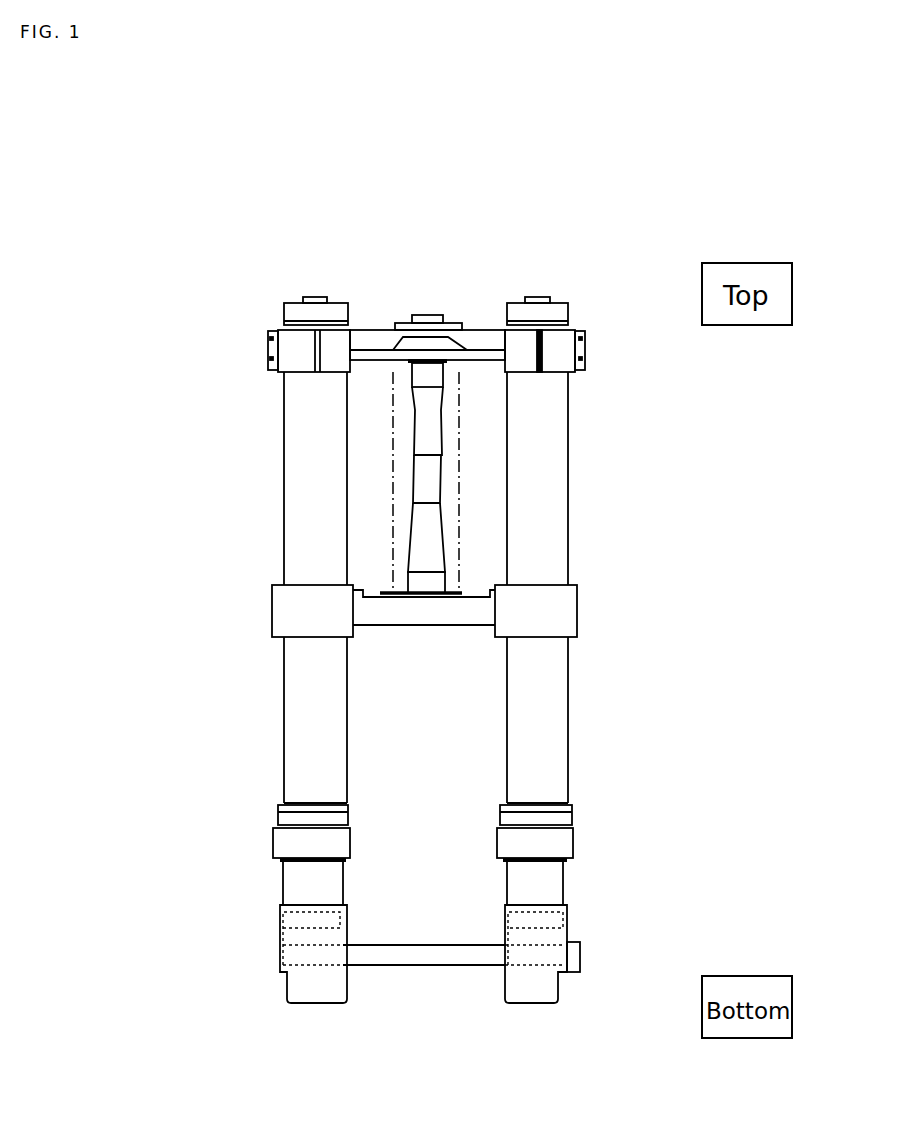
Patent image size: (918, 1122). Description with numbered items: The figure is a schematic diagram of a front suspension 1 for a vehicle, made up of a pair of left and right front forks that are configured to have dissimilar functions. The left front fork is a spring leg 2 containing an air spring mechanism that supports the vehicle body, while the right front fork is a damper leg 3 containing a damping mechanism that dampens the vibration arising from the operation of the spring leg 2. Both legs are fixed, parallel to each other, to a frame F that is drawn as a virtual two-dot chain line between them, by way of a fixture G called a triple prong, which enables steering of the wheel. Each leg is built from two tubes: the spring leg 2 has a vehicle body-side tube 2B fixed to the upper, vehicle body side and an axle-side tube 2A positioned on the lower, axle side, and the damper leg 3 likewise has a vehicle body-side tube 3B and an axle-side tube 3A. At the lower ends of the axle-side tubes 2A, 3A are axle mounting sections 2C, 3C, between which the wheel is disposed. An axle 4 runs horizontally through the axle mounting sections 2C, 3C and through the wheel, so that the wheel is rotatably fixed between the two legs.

The front suspension 1 is at (335, 247).
The spring leg 2 is at (258, 437).
The axle-side tube 2A is at (282, 883).
The vehicle body-side tube 2B is at (282, 694).
The axle mounting section 2C is at (278, 940).
The damper leg 3 is at (590, 514).
The axle-side tube 3A is at (563, 888).
The vehicle body-side tube 3B is at (568, 735).
The axle mounting section 3C is at (567, 935).
The axle 4 is at (582, 957).
The frame F is at (458, 439).
The fixture G is at (478, 592).